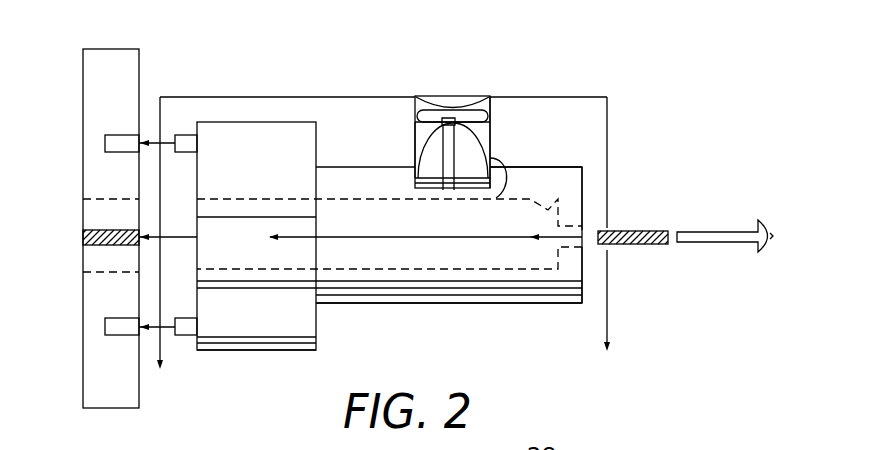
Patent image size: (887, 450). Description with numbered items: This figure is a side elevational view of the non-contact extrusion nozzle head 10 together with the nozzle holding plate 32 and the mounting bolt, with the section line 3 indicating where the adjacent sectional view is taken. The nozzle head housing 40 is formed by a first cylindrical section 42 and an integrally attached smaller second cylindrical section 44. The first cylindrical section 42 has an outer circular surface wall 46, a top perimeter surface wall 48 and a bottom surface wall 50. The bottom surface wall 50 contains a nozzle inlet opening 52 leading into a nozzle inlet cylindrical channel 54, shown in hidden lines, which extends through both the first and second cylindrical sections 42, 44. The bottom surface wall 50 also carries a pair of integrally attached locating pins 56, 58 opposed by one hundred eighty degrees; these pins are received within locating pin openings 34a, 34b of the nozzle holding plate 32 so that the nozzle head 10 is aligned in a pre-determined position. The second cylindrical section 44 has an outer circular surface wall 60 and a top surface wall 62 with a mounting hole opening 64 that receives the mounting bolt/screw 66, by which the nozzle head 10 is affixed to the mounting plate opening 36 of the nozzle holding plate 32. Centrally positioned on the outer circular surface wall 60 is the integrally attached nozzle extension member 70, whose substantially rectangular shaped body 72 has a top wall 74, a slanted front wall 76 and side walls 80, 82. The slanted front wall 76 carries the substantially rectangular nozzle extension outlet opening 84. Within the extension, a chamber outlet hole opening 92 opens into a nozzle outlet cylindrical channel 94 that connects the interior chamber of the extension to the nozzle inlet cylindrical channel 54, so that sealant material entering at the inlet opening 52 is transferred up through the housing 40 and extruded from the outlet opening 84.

The non-contact extrusion nozzle head 10 is at (633, 61).
The section line 3 is at (386, 249).
The nozzle holding plate 32 is at (104, 60).
The locating pin opening 34a is at (118, 136).
The locating pin opening 34b is at (114, 334).
The mounting plate opening 36 is at (83, 240).
The nozzle head housing 40 is at (523, 309).
The first cylindrical section 42 is at (268, 128).
The second cylindrical section 44 is at (455, 283).
The outer circular surface wall 46 is at (273, 166).
The top perimeter surface wall 48 is at (318, 348).
The bottom surface wall 50 is at (210, 178).
The nozzle inlet opening 52 is at (210, 272).
The nozzle inlet cylindrical channel 54 is at (580, 196).
The locating pin 56 is at (188, 138).
The locating pin 58 is at (190, 337).
The outer circular surface wall 60 is at (551, 177).
The top surface wall 62 is at (585, 172).
The mounting hole opening 64 is at (577, 244).
The mounting bolt/screw 66 is at (714, 231).
The nozzle extension member 70 is at (437, 86).
The rectangular shaped body 72 is at (492, 102).
The top wall 74 is at (457, 94).
The slanted front wall 76 is at (468, 158).
The side wall 80 is at (415, 135).
The side wall 82 is at (502, 182).
The nozzle extension outlet opening 84 is at (430, 116).
The chamber outlet hole opening 92 is at (421, 157).
The nozzle outlet cylindrical channel 94 is at (451, 191).